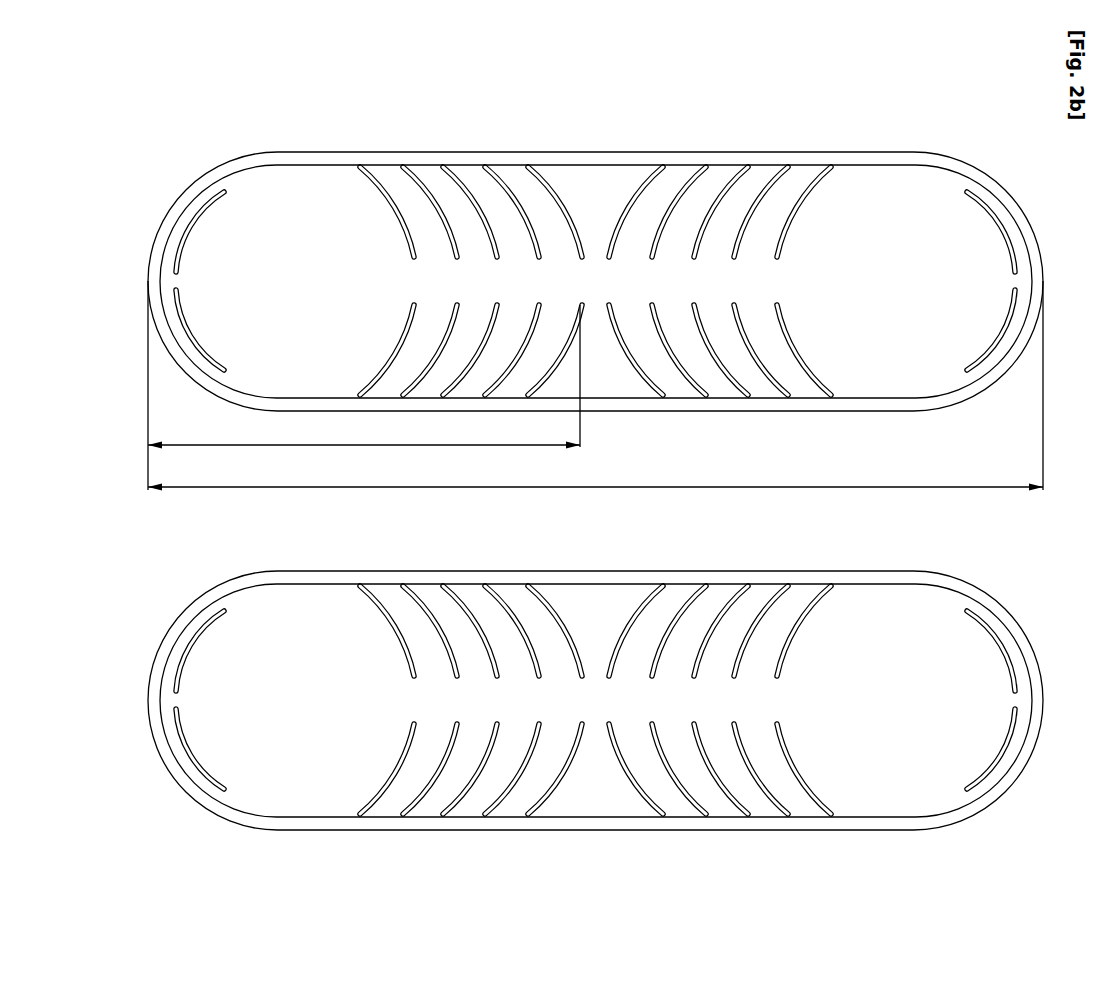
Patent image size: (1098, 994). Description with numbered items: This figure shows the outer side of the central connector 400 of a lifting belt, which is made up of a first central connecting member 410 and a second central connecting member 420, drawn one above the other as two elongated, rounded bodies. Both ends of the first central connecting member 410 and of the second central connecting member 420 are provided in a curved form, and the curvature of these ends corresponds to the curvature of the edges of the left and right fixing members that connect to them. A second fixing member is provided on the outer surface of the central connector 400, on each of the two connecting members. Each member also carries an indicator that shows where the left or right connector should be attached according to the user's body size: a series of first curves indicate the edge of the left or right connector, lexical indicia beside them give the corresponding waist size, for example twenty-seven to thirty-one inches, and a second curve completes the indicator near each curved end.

The central connector 400 is at (577, 76).
The first central connecting member 410 is at (340, 125).
The second central connecting member 420 is at (595, 704).